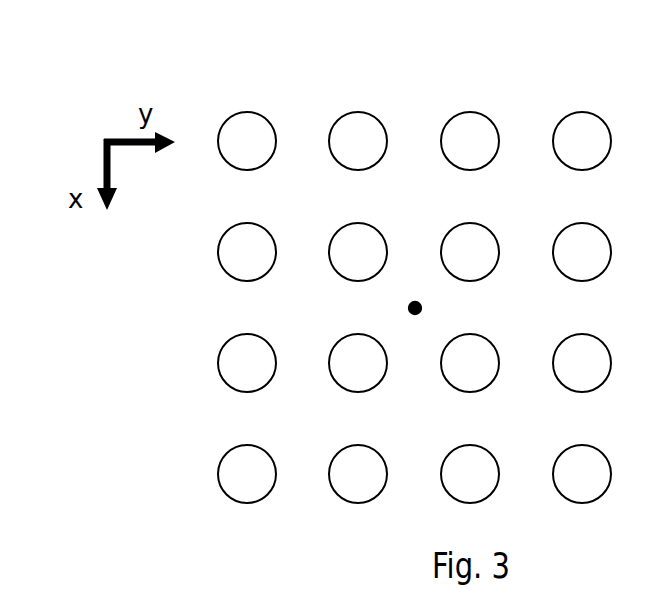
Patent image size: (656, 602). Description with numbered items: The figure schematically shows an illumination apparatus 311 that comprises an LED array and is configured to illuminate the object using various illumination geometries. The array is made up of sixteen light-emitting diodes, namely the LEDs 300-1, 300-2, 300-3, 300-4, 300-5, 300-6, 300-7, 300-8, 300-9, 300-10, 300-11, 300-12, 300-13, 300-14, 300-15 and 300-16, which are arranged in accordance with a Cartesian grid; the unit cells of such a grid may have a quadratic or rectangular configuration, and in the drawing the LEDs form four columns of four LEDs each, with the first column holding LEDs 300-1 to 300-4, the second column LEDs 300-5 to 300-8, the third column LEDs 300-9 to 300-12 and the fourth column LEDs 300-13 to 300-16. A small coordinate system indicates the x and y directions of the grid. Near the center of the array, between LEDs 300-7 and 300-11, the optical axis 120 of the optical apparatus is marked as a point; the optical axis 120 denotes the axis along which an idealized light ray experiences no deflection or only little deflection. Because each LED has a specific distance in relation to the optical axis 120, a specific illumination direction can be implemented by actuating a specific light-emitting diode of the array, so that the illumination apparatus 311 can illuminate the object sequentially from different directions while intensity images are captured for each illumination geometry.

The illumination apparatus 311 is at (124, 69).
The optical axis 120 is at (412, 315).
The LED 300-1 is at (247, 112).
The LED 300-2 is at (247, 223).
The LED 300-3 is at (247, 334).
The LED 300-4 is at (247, 445).
The LED 300-5 is at (358, 112).
The LED 300-6 is at (358, 223).
The LED 300-7 is at (358, 334).
The LED 300-8 is at (358, 445).
The LED 300-9 is at (470, 112).
The LED 300-10 is at (470, 223).
The LED 300-11 is at (470, 334).
The LED 300-12 is at (470, 445).
The LED 300-13 is at (582, 112).
The LED 300-14 is at (582, 223).
The LED 300-15 is at (582, 334).
The LED 300-16 is at (582, 445).